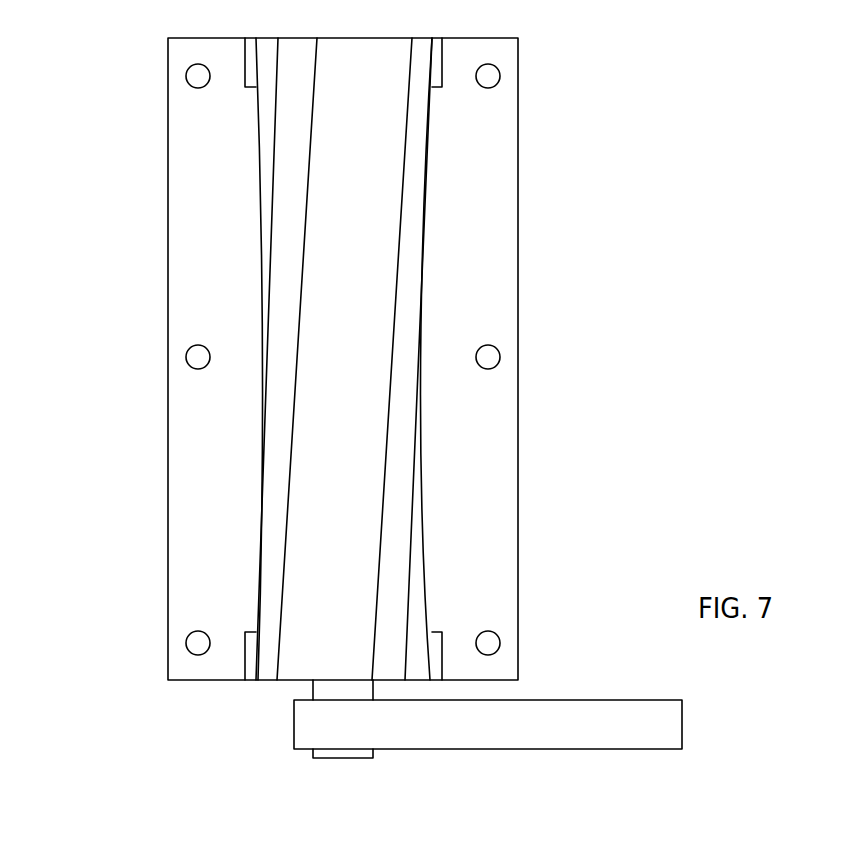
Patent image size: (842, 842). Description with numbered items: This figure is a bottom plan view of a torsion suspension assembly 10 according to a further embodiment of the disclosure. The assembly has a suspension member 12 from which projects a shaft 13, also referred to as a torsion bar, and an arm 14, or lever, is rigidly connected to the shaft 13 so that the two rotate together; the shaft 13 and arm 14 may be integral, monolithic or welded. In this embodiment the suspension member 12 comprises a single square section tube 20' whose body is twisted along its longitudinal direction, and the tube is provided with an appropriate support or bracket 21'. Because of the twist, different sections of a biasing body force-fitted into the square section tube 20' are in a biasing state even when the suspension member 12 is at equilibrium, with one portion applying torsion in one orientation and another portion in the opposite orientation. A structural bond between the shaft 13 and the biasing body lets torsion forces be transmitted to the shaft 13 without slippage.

The torsion suspension assembly 10 is at (622, 268).
The suspension member 12 is at (542, 395).
The shaft 13 is at (340, 757).
The arm 14 is at (587, 713).
The square section tube 20' is at (344, 359).
The bracket 21' is at (327, 359).